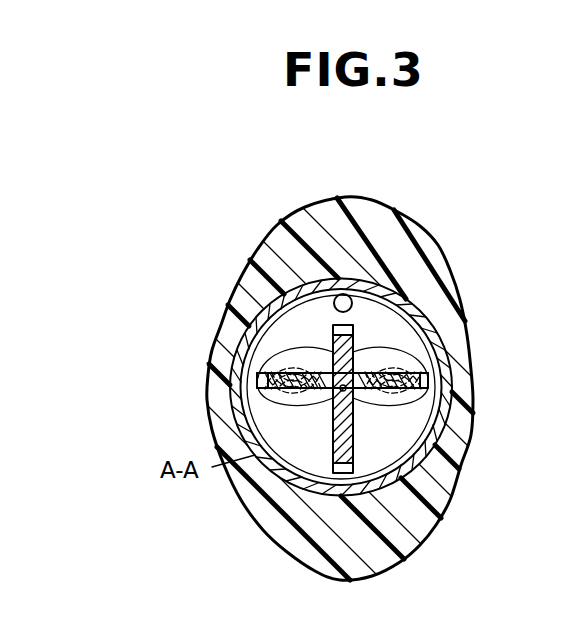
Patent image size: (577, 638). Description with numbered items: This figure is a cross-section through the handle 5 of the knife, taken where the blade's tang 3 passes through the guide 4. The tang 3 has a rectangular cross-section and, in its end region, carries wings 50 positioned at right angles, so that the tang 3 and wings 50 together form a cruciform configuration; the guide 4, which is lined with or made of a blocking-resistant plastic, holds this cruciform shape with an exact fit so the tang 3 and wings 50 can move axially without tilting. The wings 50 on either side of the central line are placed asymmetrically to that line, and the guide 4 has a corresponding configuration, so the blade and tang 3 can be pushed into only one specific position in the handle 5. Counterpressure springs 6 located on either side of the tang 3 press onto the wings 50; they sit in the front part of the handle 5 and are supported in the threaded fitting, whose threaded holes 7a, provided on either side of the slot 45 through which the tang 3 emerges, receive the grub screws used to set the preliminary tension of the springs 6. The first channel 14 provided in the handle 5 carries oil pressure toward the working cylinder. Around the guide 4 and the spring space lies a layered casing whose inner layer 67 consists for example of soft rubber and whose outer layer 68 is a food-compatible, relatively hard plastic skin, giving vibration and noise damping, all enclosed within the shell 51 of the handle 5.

The tang 3 is at (333, 432).
The guide 4 is at (333, 340).
The handle 5 is at (330, 216).
The counterpressure springs 6 is at (305, 358).
The threaded holes 7a is at (258, 380).
The first channel 14 is at (347, 294).
The slot 45 is at (284, 288).
The wings 50 is at (262, 400).
The shell 51 is at (297, 232).
The inner layer 67 is at (435, 296).
The outer layer 68 is at (408, 283).